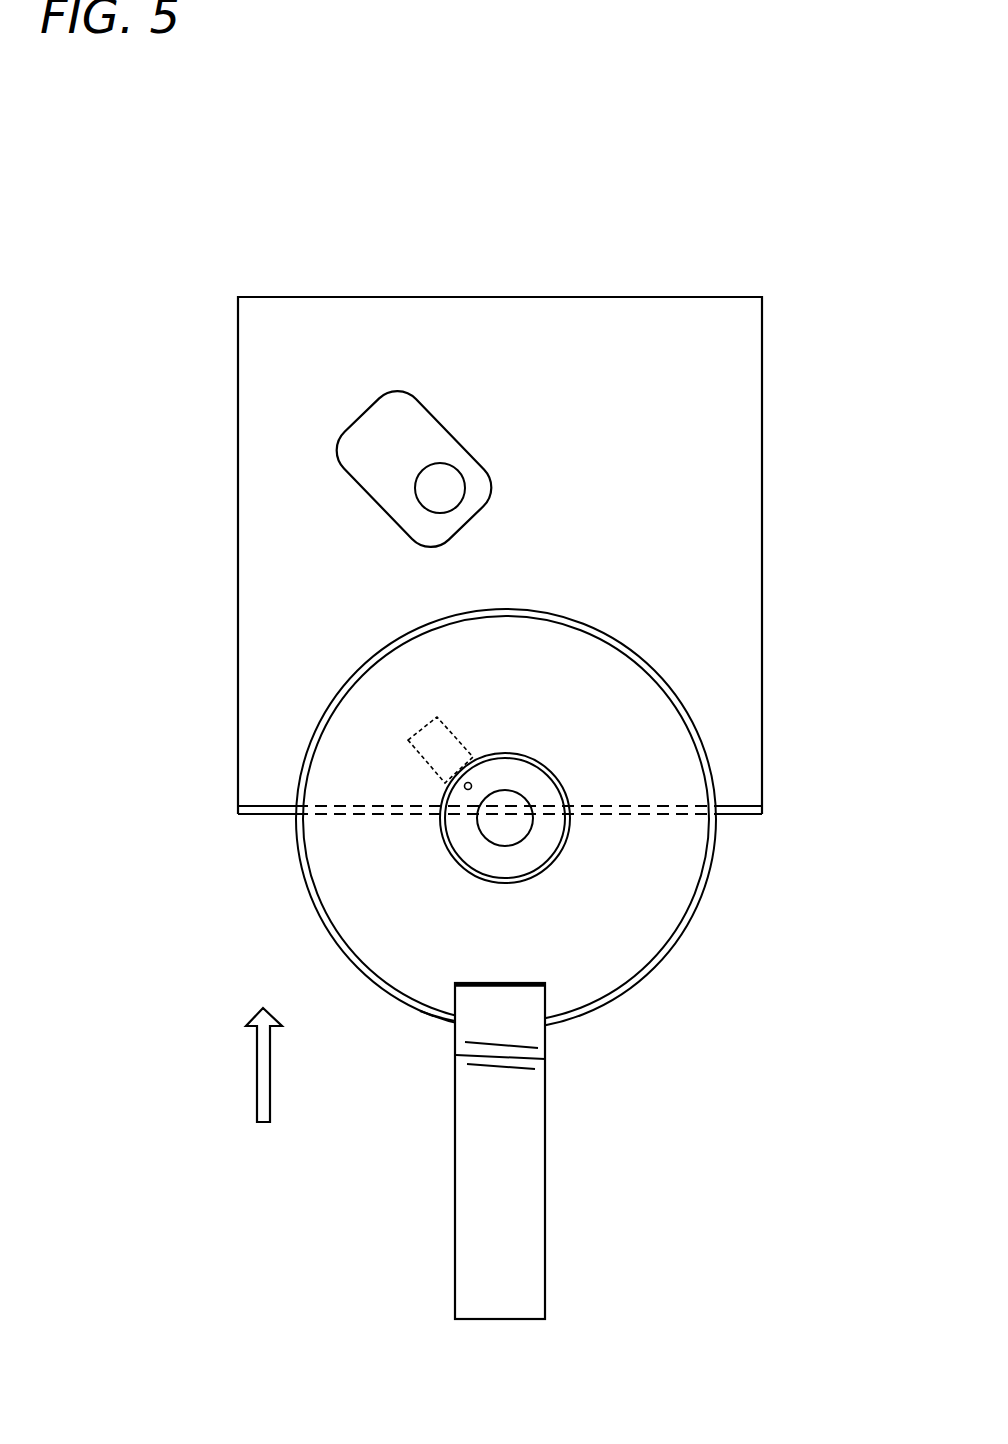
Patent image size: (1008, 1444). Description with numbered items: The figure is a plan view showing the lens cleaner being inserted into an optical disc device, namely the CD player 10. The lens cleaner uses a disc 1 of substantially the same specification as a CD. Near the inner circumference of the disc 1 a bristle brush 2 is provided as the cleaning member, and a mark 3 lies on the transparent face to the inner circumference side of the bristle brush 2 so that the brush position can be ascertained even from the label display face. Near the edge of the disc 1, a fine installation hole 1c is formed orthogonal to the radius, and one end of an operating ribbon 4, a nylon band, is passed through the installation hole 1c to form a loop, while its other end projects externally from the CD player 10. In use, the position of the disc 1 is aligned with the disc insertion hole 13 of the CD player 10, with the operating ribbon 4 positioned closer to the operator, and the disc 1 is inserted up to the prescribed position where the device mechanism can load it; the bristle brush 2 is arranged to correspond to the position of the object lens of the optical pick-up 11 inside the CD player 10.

The disc 1 is at (662, 928).
The installation hole 1c is at (502, 982).
The bristle brush 2 is at (437, 717).
The mark 3 is at (466, 784).
The operating ribbon 4 is at (535, 1110).
The CD player 10 is at (757, 617).
The optical pick-up 11 is at (413, 395).
The disc insertion hole 13 is at (452, 477).